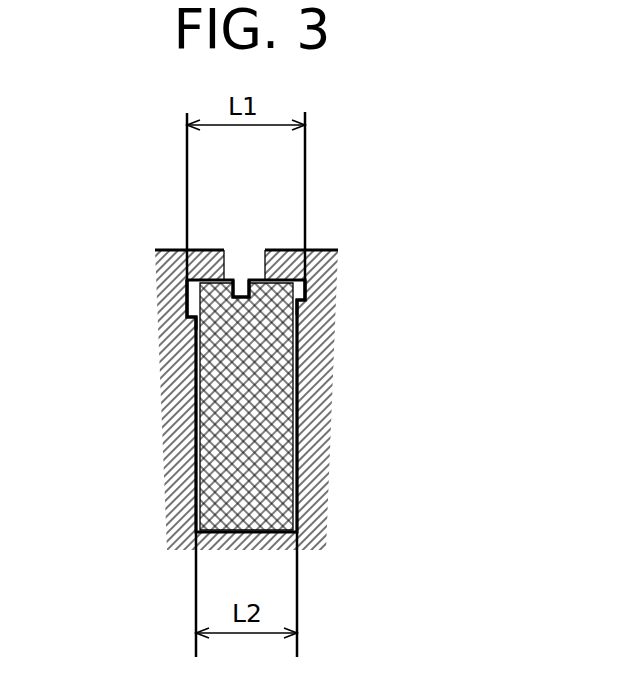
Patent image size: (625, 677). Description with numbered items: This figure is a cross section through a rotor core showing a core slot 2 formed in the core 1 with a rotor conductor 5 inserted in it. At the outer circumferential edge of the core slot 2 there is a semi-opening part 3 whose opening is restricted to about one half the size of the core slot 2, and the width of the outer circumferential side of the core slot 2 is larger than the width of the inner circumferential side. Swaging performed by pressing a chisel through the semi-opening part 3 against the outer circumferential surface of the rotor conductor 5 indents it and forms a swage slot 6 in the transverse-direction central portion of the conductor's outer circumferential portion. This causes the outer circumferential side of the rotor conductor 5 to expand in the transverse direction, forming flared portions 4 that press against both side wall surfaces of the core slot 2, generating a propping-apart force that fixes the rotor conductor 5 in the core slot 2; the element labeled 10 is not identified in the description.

The core 1 is at (318, 250).
The core slot 2 is at (297, 442).
The semi-opening part 3 is at (231, 249).
The flared portion 4 is at (193, 288).
The rotor conductor 5 is at (230, 440).
The swage slot 6 is at (247, 296).
The right step portion 10 is at (302, 303).